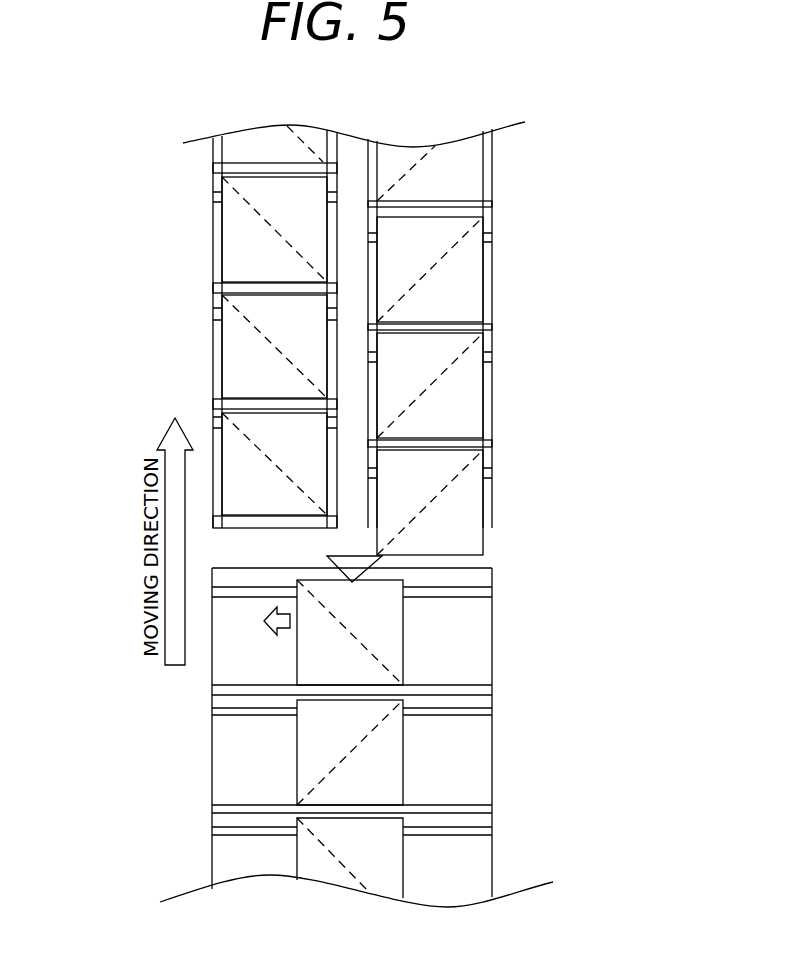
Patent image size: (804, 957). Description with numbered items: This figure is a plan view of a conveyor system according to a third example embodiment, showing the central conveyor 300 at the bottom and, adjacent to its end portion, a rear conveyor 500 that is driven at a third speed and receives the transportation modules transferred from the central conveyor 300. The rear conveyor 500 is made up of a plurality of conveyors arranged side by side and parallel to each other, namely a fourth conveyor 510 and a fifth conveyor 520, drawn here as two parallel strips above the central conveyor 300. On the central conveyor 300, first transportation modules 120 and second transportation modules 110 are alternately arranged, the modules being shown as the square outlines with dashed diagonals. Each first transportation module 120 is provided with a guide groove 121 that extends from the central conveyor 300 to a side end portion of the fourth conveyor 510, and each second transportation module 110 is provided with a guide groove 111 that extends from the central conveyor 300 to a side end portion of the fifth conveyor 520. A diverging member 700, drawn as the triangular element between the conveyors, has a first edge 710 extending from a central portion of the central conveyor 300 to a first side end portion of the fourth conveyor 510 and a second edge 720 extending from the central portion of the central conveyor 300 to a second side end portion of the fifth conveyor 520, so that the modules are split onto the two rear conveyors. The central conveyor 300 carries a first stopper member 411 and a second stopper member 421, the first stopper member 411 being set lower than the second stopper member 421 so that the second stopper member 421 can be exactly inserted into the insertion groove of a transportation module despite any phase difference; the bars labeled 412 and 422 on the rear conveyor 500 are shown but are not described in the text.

The rear conveyor 500 is at (166, 288).
The fourth conveyor 510 is at (213, 230).
The first transportation module 120 is at (213, 372).
The guide groove 121 is at (285, 327).
The fifth conveyor 520 is at (492, 280).
The second transportation module 110 is at (492, 412).
The guide groove 111 is at (430, 368).
The first partition bar 412 is at (483, 323).
The second partition bar 422 is at (492, 233).
The central conveyor 300 is at (170, 783).
The first stopper member 411 is at (485, 810).
The second stopper member 421 is at (488, 710).
The diverging member 700 is at (355, 565).
The first edge 710 is at (345, 570).
The second edge 720 is at (367, 570).